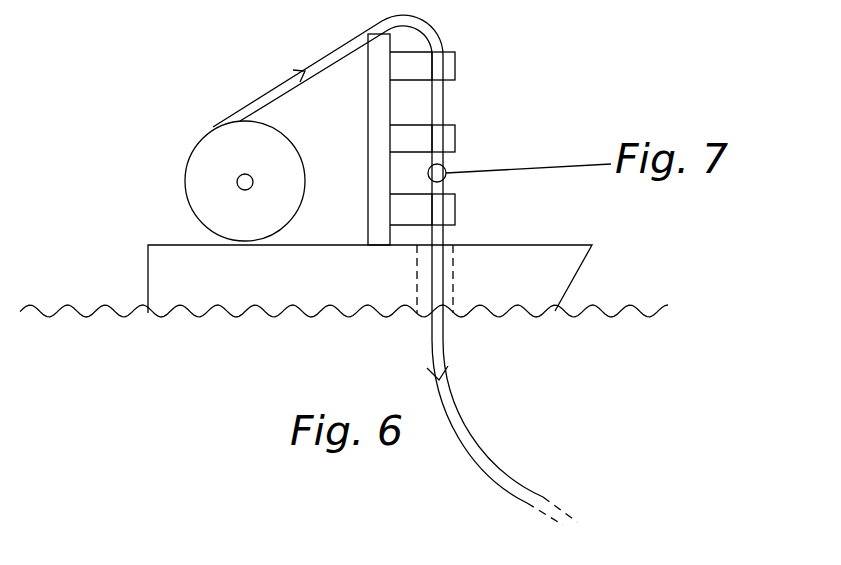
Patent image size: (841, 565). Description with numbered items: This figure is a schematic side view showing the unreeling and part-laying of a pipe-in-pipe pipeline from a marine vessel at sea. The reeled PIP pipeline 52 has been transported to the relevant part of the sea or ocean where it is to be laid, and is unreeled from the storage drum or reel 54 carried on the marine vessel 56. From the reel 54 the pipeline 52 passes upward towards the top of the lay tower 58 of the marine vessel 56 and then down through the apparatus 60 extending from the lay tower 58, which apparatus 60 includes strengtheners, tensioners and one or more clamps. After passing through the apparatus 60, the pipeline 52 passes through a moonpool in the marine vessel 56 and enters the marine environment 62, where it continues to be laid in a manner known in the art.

The PIP pipeline 52 is at (268, 93).
The storage drum or reel 54 is at (190, 202).
The marine vessel 56 is at (207, 287).
The lay tower 58 is at (368, 150).
The apparatus 60 is at (455, 68).
The marine environment 62 is at (333, 363).